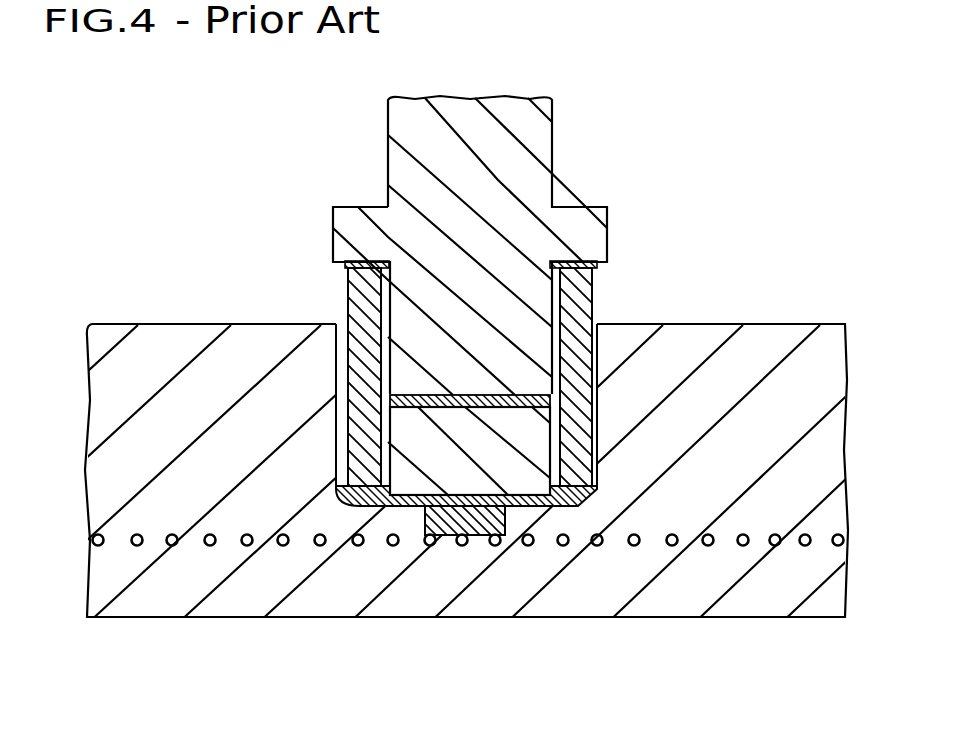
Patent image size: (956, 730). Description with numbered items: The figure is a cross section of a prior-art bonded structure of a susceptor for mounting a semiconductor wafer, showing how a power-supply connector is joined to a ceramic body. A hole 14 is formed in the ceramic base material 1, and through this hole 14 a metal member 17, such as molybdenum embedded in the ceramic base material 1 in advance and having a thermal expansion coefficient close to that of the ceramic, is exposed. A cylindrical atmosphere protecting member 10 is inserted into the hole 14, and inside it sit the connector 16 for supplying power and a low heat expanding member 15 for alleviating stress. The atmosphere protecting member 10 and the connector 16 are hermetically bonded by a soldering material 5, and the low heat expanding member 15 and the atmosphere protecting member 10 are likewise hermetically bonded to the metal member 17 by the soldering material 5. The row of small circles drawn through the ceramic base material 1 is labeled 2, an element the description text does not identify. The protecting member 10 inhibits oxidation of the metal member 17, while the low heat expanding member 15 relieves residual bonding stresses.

The ceramic base material 1 is at (773, 347).
The parting line 2 is at (673, 547).
The soldering material 5 is at (347, 264).
The atmosphere protecting member 10 is at (590, 293).
The hole 14 is at (595, 415).
The low heat expanding member 15 is at (410, 443).
The connector 16 is at (510, 155).
The metal member 17 is at (477, 535).